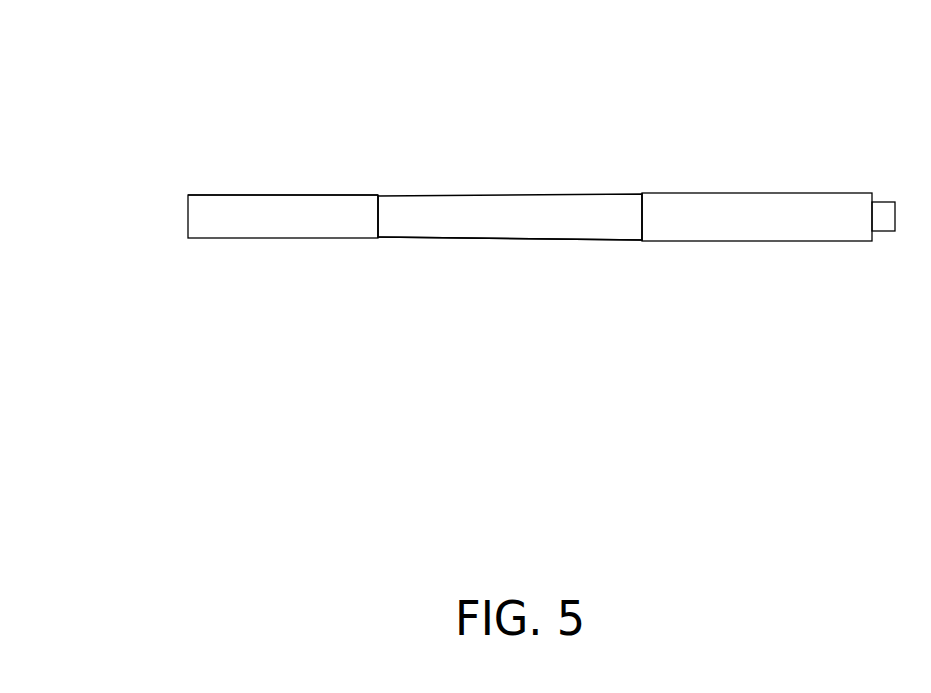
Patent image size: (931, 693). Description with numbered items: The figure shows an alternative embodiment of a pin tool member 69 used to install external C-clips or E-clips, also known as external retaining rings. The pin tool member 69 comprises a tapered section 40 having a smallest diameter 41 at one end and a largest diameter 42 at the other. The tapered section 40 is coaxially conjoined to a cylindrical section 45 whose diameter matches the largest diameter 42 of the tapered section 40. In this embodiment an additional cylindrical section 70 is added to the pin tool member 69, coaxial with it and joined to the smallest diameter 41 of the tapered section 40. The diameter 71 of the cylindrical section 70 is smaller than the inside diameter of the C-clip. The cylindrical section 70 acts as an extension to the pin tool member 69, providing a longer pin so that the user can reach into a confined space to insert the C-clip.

The cylindrical section 70 is at (203, 136).
The diameter of the cylindrical section 71 is at (329, 111).
The smallest diameter 41 is at (281, 270).
The pin tool member 69 is at (518, 148).
The tapered section 40 is at (524, 279).
The largest diameter 42 is at (723, 162).
The cylindrical section 45 is at (768, 264).